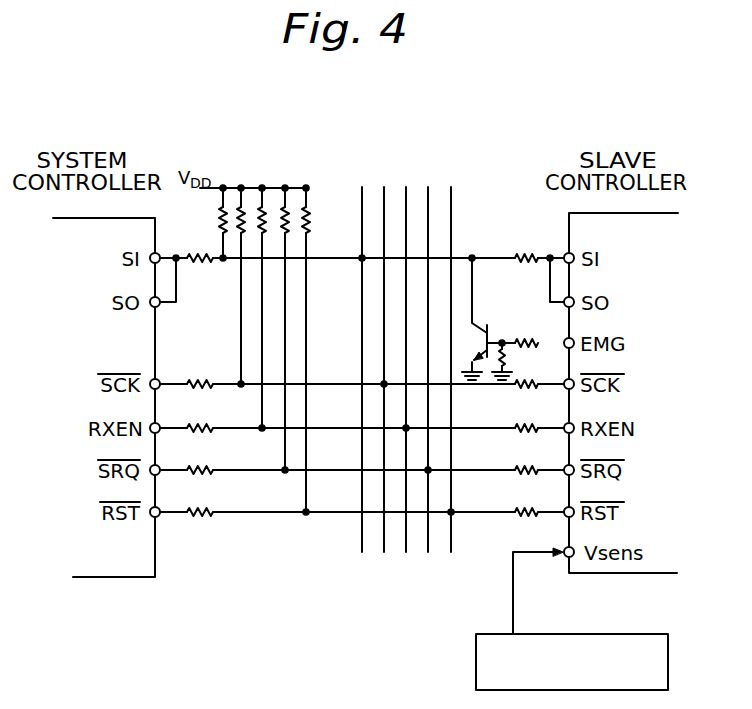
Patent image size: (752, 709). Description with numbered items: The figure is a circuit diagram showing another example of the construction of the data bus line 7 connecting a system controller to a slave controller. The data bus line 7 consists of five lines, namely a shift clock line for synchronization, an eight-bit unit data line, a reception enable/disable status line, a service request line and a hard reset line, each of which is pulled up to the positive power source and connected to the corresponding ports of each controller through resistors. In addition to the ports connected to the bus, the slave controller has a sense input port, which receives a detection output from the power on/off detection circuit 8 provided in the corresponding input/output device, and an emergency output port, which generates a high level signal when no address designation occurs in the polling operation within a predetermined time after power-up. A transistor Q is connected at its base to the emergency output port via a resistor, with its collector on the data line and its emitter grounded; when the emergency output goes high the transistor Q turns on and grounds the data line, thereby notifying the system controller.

The data bus line 7 is at (463, 218).
The power on/off detection circuit 8 is at (613, 634).
The transistor Q is at (480, 345).